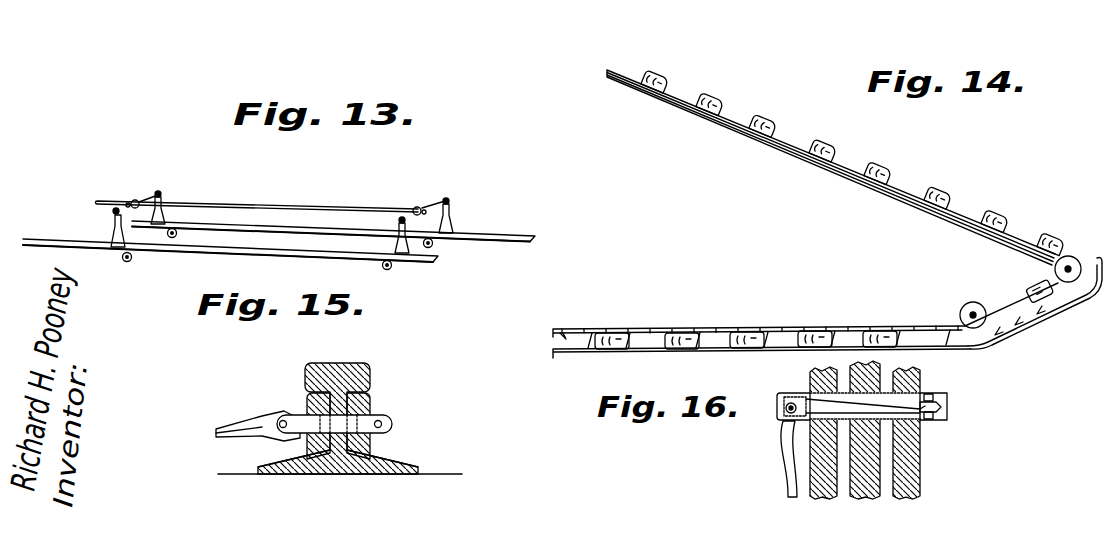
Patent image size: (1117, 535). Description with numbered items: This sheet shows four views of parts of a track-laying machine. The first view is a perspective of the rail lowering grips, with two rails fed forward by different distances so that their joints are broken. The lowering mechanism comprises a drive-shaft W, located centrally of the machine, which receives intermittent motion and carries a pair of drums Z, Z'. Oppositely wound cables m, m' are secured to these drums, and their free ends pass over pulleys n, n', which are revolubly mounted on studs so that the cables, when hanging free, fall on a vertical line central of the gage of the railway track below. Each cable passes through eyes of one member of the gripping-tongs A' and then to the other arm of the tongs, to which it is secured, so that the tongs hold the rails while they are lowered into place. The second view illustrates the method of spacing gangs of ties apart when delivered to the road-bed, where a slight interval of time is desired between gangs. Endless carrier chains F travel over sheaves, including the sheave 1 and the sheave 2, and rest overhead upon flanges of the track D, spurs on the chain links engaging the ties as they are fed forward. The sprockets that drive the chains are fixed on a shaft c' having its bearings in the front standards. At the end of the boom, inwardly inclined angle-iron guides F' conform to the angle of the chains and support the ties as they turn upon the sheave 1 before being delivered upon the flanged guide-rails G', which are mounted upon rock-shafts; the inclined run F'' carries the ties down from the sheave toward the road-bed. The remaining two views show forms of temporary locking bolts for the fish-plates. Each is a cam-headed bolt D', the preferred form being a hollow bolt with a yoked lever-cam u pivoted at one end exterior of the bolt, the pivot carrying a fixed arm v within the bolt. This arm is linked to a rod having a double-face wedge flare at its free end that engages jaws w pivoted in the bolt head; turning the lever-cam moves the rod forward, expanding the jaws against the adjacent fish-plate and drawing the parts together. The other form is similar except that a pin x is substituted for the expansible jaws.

In FIG. 13, the drive-shaft W is at (245, 206).
In FIG. 13, the drum Z is at (276, 190).
In FIG. 13, the drum Z' is at (398, 196).
In FIG. 13, the cable m is at (136, 179).
In FIG. 13, the cable m' is at (433, 191).
In FIG. 13, the pulley n is at (133, 193).
In FIG. 13, the pulley n' is at (421, 205).
In FIG. 13, the gripping-tongs A' is at (290, 216).
In FIG. 13, the fixed arm v is at (152, 266).
In FIG. 16, the fixed arm v is at (778, 408).
In FIG. 14, the track D is at (831, 167).
In FIG. 15, the cam-headed bolt D' is at (338, 418).
In FIG. 16, the cam-headed bolt D' is at (880, 430).
In FIG. 14, the endless carrier chain F is at (801, 124).
In FIG. 14, the angle-iron guide F' is at (759, 324).
In FIG. 14, the inclined conveyor portion F'' is at (1033, 310).
In FIG. 14, the flanged guide-rail G' is at (761, 359).
In FIG. 14, the yoked lever-cam u is at (924, 192).
In FIG. 16, the yoked lever-cam u is at (795, 392).
In FIG. 14, the sheave 1 is at (1054, 271).
In FIG. 14, the shaft c' is at (1079, 254).
In FIG. 14, the sheave 2 is at (975, 313).
In FIG. 15, the pin x is at (392, 424).
In FIG. 16, the jaws w is at (935, 397).